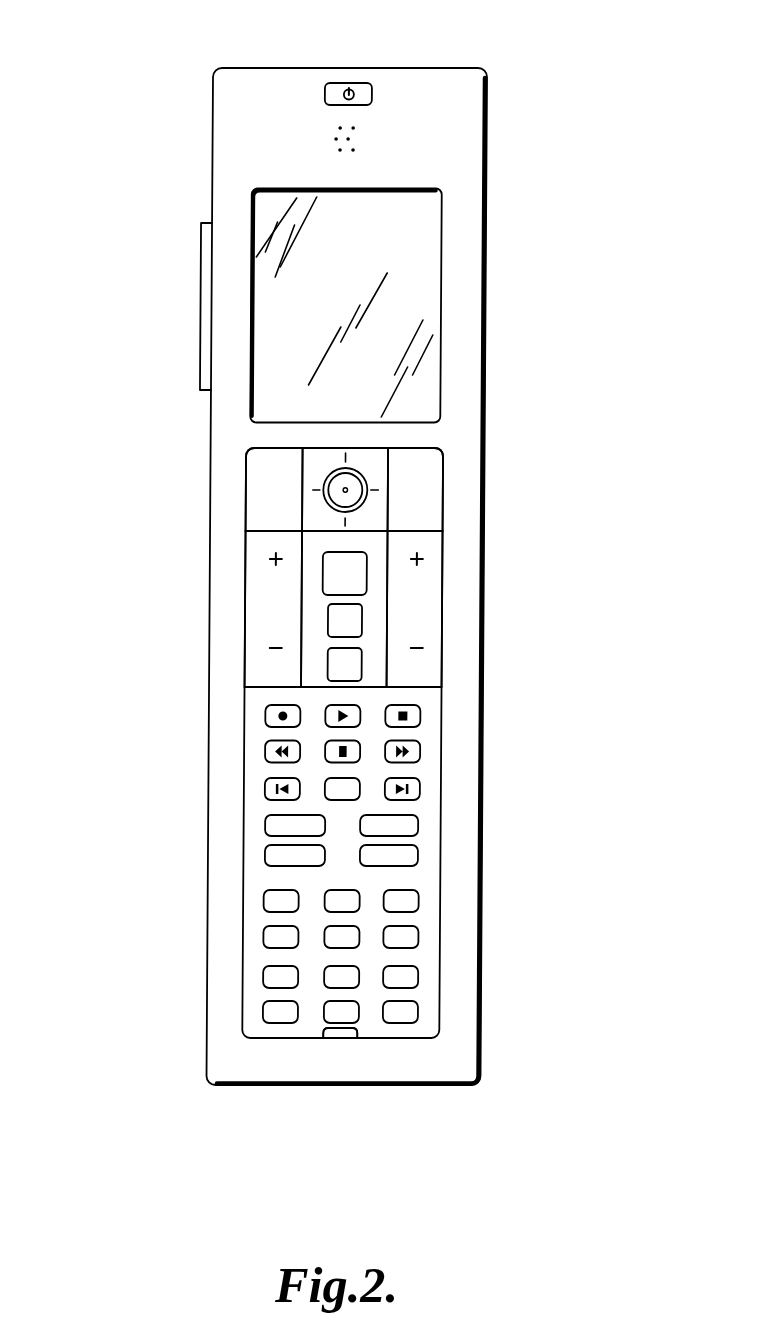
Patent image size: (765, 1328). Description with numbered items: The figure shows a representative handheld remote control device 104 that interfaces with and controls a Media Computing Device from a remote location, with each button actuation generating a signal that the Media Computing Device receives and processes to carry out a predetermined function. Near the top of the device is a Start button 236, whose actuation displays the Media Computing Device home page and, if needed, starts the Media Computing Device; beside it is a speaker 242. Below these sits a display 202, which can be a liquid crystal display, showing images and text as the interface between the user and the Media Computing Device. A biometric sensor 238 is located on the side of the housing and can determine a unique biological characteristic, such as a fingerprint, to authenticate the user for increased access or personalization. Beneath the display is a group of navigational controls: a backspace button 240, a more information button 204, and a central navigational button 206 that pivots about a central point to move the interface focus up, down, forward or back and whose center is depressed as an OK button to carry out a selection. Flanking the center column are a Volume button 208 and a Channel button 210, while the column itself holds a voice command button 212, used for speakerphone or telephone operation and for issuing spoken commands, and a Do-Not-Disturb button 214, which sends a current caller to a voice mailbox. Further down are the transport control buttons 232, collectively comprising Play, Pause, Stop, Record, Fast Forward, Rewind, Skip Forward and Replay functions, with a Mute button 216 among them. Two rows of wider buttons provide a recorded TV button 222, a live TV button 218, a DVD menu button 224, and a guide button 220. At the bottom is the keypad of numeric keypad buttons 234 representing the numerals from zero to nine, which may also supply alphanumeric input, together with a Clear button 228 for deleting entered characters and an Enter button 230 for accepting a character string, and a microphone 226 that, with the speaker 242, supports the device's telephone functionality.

The handheld remote control device 104 is at (488, 115).
The display 202 is at (428, 263).
The more information button 204 is at (415, 489).
The navigational button 206 is at (353, 490).
The Volume button 208 is at (262, 612).
The Channel button 210 is at (417, 582).
The voice command button 212 is at (350, 619).
The Do-Not-Disturb button 214 is at (350, 661).
The Mute button 216 is at (341, 789).
The live TV button 218 is at (403, 823).
The guide button 220 is at (403, 853).
The recorded TV button 222 is at (277, 826).
The DVD menu button 224 is at (277, 856).
The microphone 226 is at (342, 1035).
The Clear button 228 is at (274, 1014).
The Enter button 230 is at (407, 1012).
The transport control buttons 232 is at (194, 694).
The numeric keypad buttons 234 is at (196, 881).
The Start button 236 is at (350, 83).
The biometric sensor 238 is at (202, 288).
The backspace button 240 is at (268, 490).
The speaker 242 is at (358, 139).